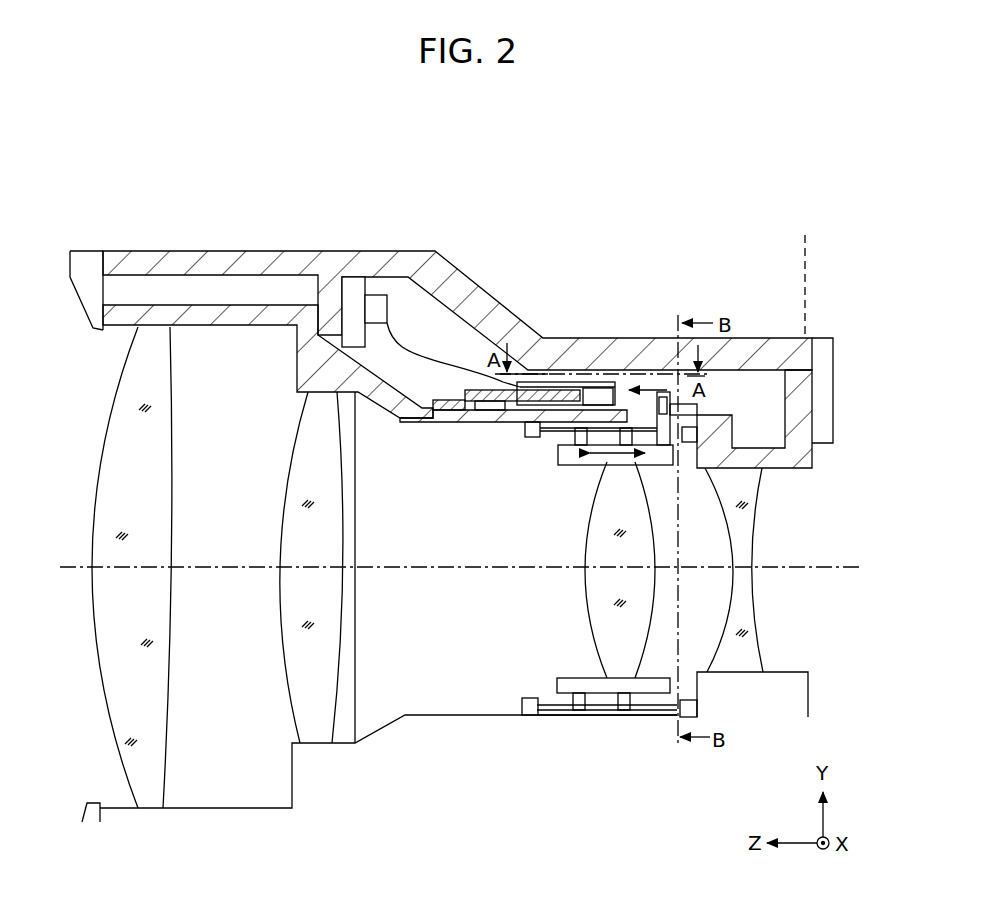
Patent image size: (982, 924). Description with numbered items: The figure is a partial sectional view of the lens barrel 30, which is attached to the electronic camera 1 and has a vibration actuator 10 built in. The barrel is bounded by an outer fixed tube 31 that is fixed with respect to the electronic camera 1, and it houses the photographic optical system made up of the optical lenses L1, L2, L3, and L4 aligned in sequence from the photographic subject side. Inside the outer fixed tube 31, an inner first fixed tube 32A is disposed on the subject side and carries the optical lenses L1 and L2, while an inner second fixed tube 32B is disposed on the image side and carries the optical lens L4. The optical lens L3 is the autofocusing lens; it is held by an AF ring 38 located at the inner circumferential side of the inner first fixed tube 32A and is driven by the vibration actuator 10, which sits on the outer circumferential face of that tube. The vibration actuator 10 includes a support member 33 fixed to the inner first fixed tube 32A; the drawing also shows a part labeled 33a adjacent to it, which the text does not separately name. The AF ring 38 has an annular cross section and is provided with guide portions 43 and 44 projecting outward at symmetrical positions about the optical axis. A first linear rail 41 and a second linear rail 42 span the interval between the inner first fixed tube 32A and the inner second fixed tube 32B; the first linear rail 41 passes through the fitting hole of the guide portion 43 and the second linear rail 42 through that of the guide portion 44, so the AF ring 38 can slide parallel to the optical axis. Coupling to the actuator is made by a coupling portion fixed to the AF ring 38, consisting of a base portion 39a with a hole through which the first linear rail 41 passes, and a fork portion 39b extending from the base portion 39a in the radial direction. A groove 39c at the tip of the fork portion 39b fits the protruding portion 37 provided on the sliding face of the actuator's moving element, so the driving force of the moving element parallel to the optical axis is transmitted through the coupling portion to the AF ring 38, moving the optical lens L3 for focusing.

The electronic camera 1 is at (815, 252).
The vibration actuator 10 is at (580, 372).
The lens barrel 30 is at (464, 206).
The outer fixed tube 31 is at (503, 315).
The inner first fixed tube 32A is at (405, 420).
The inner second fixed tube 32B is at (803, 457).
The support member 33 is at (450, 400).
The cam follower 33a is at (492, 401).
The protruding portion 37 is at (685, 405).
The AF ring 38 is at (563, 465).
The base portion 39a is at (683, 423).
The fork portion 39b is at (637, 390).
The groove 39c is at (662, 392).
The first linear rail 41 is at (540, 438).
The second linear rail 42 is at (657, 713).
The guide portion 43 is at (628, 445).
The guide portion 44 is at (623, 713).
The optical lens L1 is at (107, 702).
The optical lens L2 is at (293, 663).
The optical lens L3 is at (597, 605).
The optical lens L4 is at (748, 593).